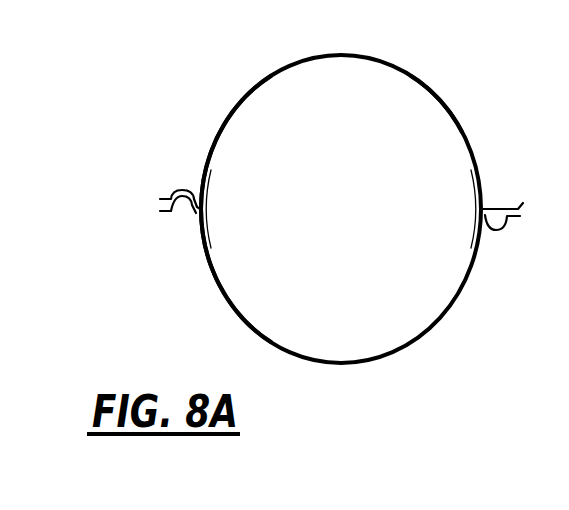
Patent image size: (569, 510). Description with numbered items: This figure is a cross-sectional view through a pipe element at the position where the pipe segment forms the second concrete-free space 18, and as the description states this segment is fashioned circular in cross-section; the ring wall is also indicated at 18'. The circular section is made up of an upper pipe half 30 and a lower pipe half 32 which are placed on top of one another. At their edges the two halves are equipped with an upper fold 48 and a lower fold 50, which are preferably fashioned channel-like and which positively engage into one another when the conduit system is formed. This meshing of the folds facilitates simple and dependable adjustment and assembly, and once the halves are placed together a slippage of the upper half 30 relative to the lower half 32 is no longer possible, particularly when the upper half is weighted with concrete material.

The second concrete-free space 18 is at (341, 188).
The ring outer surface 18' is at (478, 104).
The upper pipe half 30 is at (224, 121).
The lower pipe half 32 is at (212, 273).
The upper fold 48 is at (518, 206).
The lower fold 50 is at (498, 232).